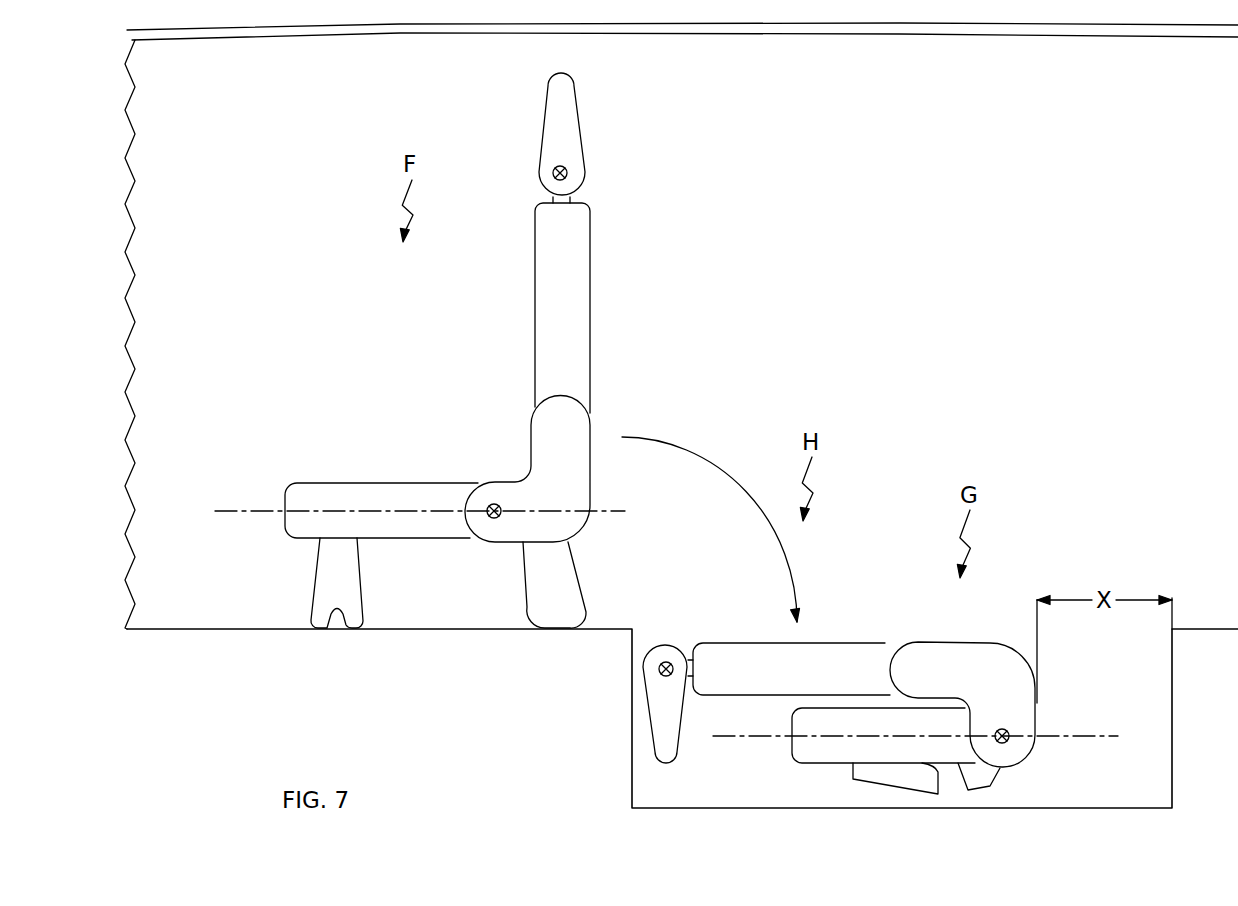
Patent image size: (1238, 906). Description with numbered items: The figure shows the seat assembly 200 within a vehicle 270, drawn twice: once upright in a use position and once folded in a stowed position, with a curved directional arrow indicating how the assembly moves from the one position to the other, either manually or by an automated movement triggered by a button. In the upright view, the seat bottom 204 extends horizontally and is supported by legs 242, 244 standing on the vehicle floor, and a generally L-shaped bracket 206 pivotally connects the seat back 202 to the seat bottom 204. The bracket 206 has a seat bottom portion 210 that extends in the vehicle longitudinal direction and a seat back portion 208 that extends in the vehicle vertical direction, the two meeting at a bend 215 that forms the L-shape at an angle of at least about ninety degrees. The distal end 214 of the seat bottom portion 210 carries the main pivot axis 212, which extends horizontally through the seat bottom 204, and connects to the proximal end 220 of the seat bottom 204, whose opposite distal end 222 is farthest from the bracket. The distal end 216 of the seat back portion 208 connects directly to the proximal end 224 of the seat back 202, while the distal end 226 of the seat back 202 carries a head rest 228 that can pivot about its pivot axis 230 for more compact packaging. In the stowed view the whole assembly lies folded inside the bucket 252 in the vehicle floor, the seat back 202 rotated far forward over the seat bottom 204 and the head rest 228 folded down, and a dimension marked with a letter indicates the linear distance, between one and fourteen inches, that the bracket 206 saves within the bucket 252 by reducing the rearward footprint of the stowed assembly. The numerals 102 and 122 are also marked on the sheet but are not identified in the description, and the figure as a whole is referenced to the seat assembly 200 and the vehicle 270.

The seat assembly 102 is at (680, 279).
The floor 122 is at (300, 523).
The seat assembly 200 is at (616, 361).
The seat back 202 is at (842, 580).
The seat bottom 204 is at (540, 610).
The bracket 206 is at (744, 578).
The seat back portion 208 is at (568, 470).
The seat bottom portion 210 is at (568, 522).
The main pivot axis 212 is at (492, 521).
The distal end of seat bottom portion 214 is at (480, 528).
The bend 215 is at (612, 515).
The distal end of seat back portion 216 is at (580, 428).
The proximal end of seat bottom 220 is at (405, 495).
The distal end of seat bottom 222 is at (796, 748).
The proximal end of seat back 224 is at (578, 392).
The distal end of seat back 226 is at (577, 250).
The head rest 228 is at (568, 108).
The pivot axis 230 is at (567, 177).
The leg 242 is at (320, 615).
The leg 244 is at (555, 615).
The bucket 252 is at (1030, 521).
The vehicle 270 is at (682, 466).